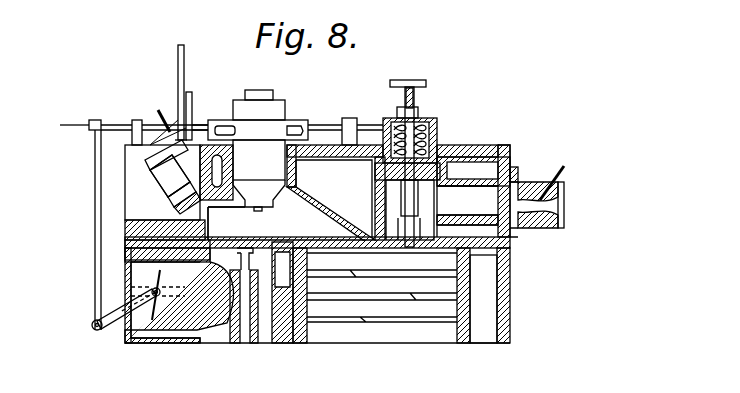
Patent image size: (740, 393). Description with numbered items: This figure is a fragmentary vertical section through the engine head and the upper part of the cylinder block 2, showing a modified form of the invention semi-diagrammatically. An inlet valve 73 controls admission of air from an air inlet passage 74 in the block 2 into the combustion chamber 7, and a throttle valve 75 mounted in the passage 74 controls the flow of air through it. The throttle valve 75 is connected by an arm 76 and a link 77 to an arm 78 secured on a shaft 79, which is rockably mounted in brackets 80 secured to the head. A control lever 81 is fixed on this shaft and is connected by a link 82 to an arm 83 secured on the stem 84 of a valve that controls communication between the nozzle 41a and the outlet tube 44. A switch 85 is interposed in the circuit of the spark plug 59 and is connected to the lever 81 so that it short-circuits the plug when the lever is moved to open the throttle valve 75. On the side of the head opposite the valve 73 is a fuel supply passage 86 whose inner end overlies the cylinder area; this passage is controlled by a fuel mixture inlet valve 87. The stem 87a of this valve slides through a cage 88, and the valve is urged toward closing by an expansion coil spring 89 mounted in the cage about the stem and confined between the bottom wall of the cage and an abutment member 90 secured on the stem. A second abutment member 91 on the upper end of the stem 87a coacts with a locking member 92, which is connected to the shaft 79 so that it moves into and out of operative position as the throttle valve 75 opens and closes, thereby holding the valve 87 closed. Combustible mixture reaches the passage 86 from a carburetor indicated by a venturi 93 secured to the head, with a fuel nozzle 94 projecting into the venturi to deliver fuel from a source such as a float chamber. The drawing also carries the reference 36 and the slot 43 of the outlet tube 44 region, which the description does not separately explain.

The block 2 is at (130, 340).
The combustion chamber 7 is at (300, 220).
The mixture outlet 36 is at (499, 150).
The nozzle 41a is at (277, 108).
The slot 43 is at (299, 127).
The outlet tube 44 is at (235, 131).
The spark plug 59 is at (172, 200).
The inlet valve 73 is at (225, 240).
The air inlet passage 74 is at (137, 272).
The throttle valve 75 is at (160, 288).
The arm 76 is at (118, 330).
The link 77 is at (95, 165).
The arm 78 is at (64, 123).
The shaft 79 is at (112, 128).
The brackets 80 is at (137, 120).
The control lever 81 is at (184, 60).
The link 82 is at (185, 90).
The arm 83 is at (191, 100).
The stem 84 is at (200, 125).
The switch 85 is at (154, 135).
The fuel supply passage 86 is at (518, 180).
The fuel mixture inlet valve 87 is at (399, 238).
The valve stem 87a is at (418, 210).
The cage 88 is at (440, 140).
The expansion coil spring 89 is at (437, 128).
The abutment member 90 is at (432, 122).
The second abutment member 91 is at (409, 80).
The locking member 92 is at (400, 107).
The venturi 93 is at (562, 222).
The fuel nozzle 94 is at (556, 195).